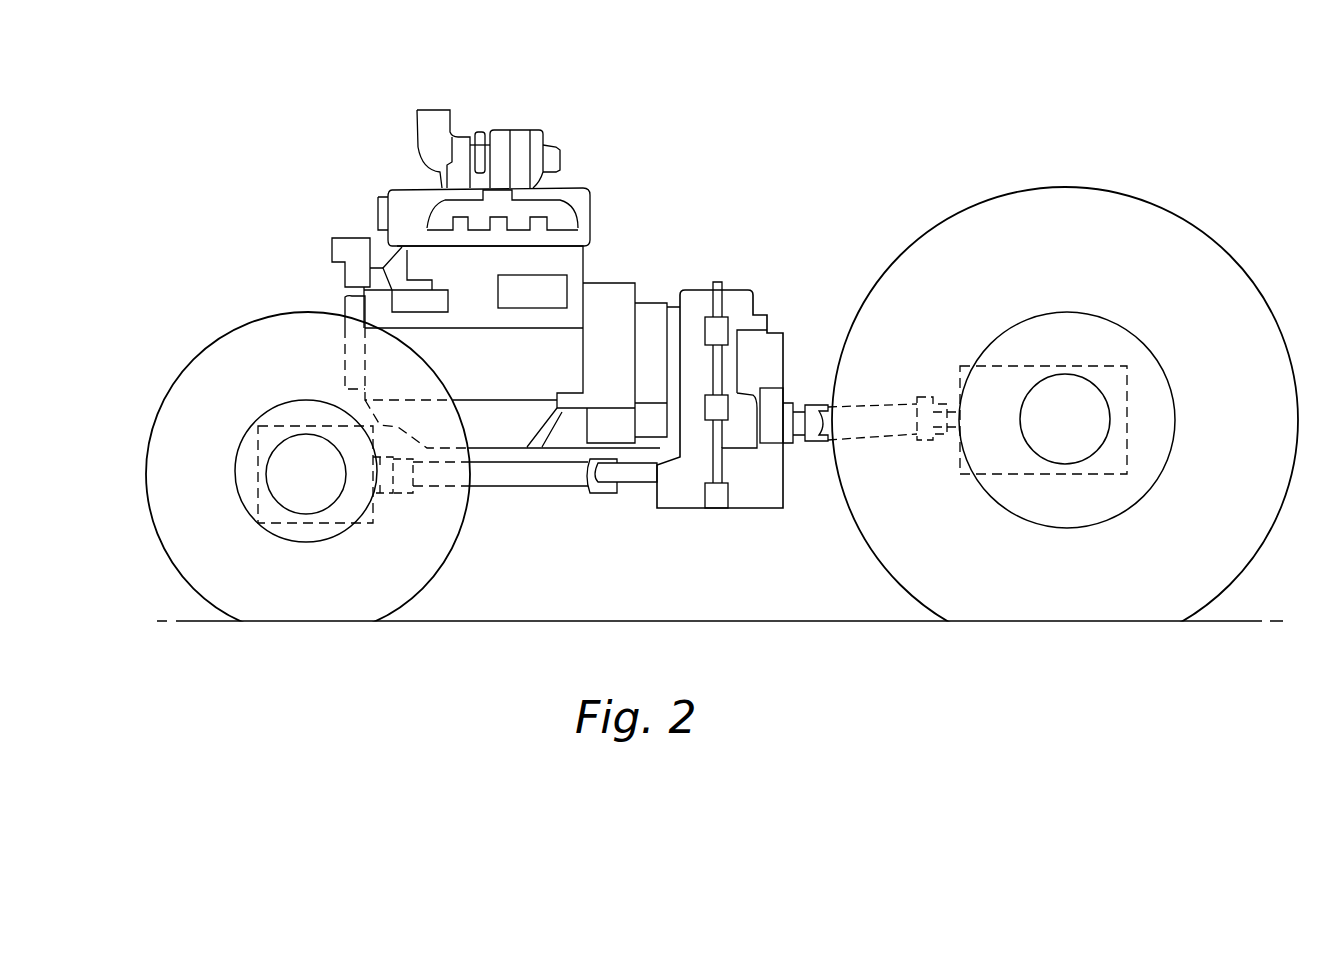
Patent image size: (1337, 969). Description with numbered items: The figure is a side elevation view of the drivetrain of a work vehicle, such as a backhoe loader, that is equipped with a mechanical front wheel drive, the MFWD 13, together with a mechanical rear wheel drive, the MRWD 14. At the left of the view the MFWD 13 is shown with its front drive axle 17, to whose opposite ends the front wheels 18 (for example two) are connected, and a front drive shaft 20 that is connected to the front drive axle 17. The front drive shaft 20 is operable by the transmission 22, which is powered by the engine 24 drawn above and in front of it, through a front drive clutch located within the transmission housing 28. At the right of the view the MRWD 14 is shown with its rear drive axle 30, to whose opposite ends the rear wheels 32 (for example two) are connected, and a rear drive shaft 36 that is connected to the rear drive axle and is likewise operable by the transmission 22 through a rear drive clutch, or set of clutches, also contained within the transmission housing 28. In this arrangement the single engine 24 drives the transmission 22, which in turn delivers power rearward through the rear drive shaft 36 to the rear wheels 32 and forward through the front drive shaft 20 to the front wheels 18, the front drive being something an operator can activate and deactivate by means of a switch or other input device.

The MFWD 13 is at (482, 566).
The MRWD 14 is at (823, 512).
The front drive axle 17 is at (324, 481).
The front wheels 18 is at (176, 545).
The front drive shaft 20 is at (503, 487).
The transmission 22 is at (682, 494).
The engine 24 is at (578, 200).
The transmission housing 28 is at (747, 497).
The rear drive axle 30 is at (1084, 425).
The rear wheels 32 is at (1247, 552).
The rear drive shaft 36 is at (870, 405).